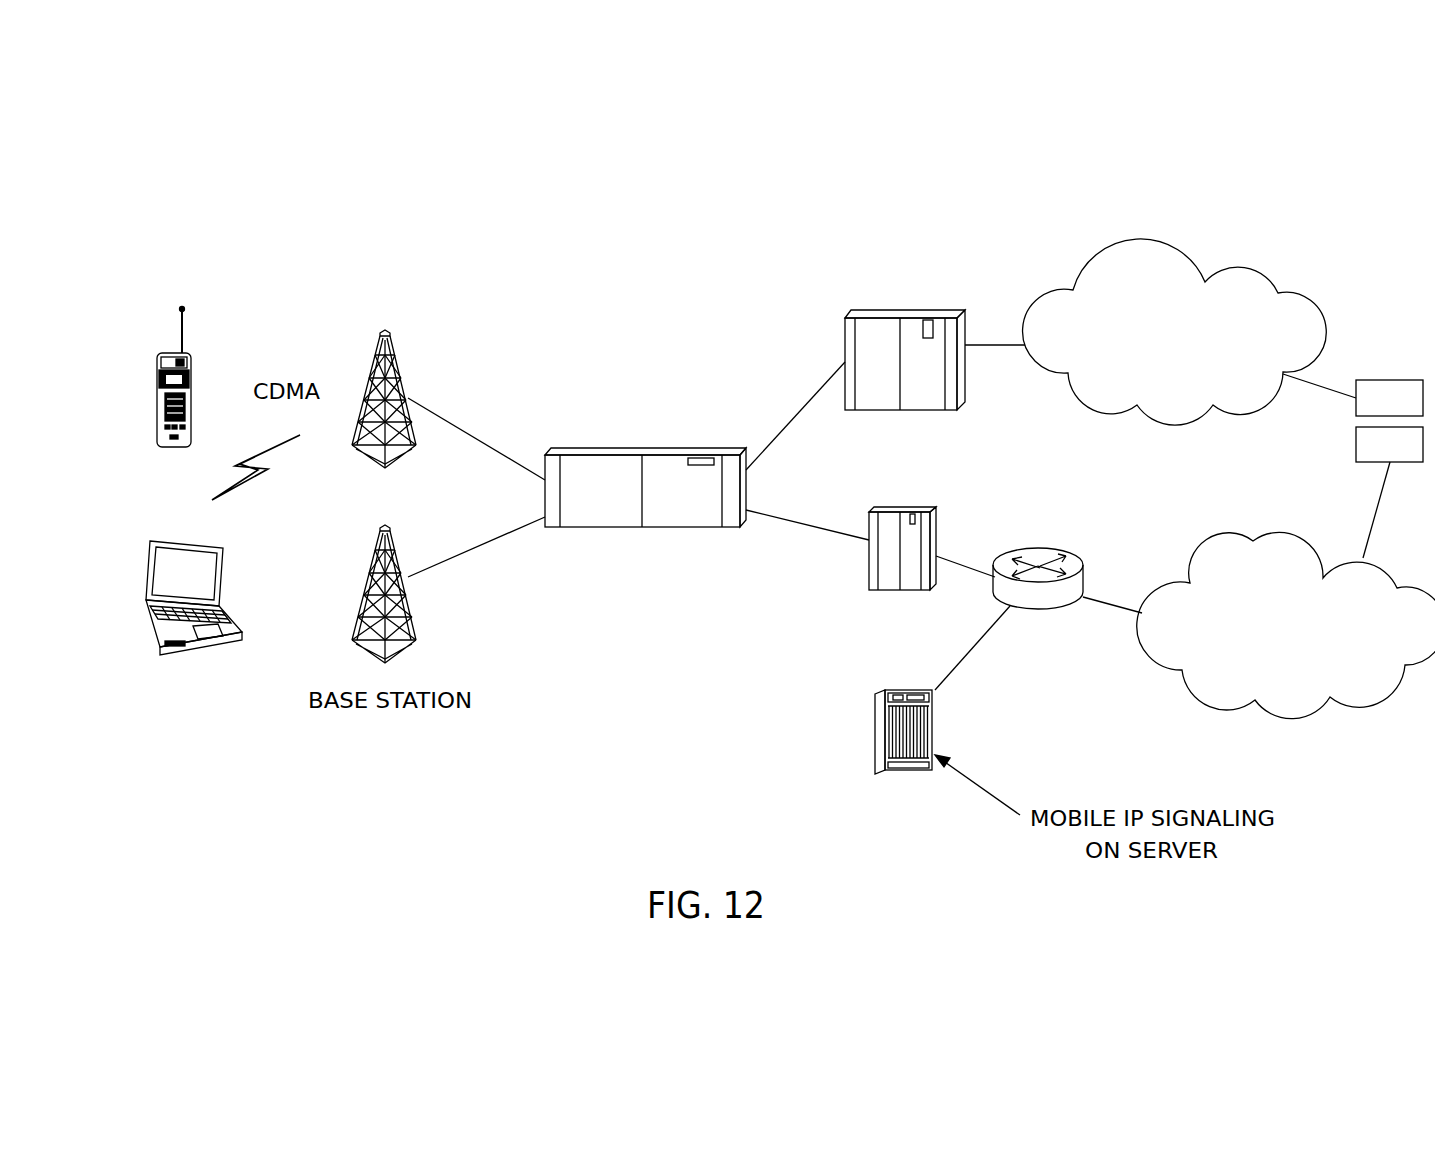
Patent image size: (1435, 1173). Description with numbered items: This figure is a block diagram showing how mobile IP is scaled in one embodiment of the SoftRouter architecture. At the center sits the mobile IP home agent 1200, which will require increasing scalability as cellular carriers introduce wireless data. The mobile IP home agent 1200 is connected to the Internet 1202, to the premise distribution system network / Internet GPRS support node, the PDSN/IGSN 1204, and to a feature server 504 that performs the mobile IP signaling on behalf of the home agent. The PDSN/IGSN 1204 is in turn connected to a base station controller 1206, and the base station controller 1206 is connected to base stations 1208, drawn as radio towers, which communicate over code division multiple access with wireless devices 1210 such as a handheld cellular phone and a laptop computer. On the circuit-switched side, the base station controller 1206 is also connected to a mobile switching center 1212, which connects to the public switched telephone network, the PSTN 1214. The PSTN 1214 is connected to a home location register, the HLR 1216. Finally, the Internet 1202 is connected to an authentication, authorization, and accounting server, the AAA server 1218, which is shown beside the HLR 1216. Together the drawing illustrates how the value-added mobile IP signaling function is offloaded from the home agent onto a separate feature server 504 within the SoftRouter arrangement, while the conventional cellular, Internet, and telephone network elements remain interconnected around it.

The wireless devices 1210 is at (157, 388).
The base stations 1208 is at (390, 334).
The base station controller 1206 is at (602, 448).
The mobile switching center 1212 is at (848, 312).
The public switched telephone network (PSTN) 1214 is at (1172, 244).
The home location register (HLR) 1216 is at (1368, 380).
The authentication, authorization, and accounting (AAA) server 1218 is at (1356, 445).
The Internet 1202 is at (1290, 657).
The PDSN/IGSN 1204 is at (882, 508).
The mobile IP home agent 1200 is at (996, 558).
The feature server 504 is at (875, 722).